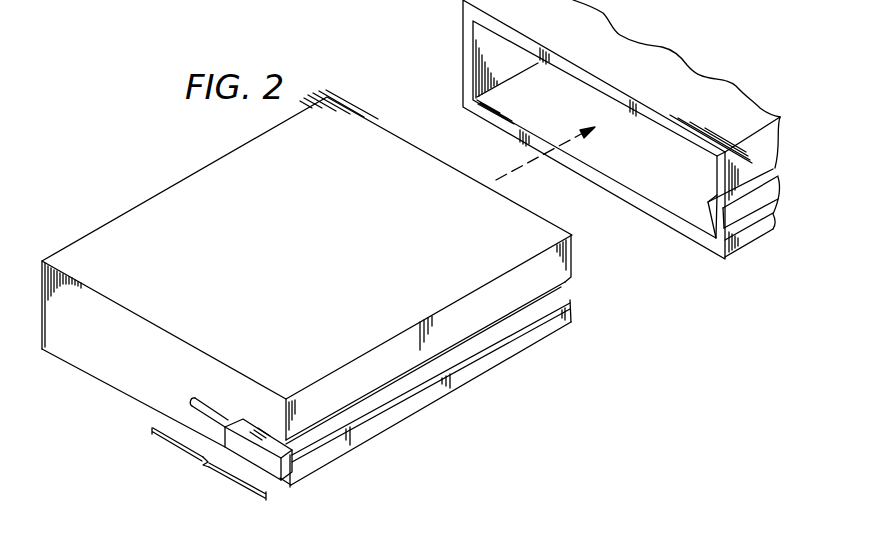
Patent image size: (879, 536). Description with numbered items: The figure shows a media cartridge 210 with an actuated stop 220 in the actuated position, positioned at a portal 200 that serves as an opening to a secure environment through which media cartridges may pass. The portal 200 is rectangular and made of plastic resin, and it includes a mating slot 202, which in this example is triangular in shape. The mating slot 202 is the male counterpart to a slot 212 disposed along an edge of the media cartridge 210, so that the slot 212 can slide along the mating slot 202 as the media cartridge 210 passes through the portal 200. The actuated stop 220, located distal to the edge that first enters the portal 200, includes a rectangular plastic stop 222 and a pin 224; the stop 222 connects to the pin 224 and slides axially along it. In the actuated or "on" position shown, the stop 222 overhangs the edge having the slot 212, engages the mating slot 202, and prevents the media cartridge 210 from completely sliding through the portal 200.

The portal 200 is at (463, 53).
The mating slot 202 is at (712, 208).
The media cartridge 210 is at (141, 198).
The slot 212 is at (565, 298).
The actuated stop 220 is at (203, 463).
The stop 222 is at (285, 464).
The pin 224 is at (209, 408).